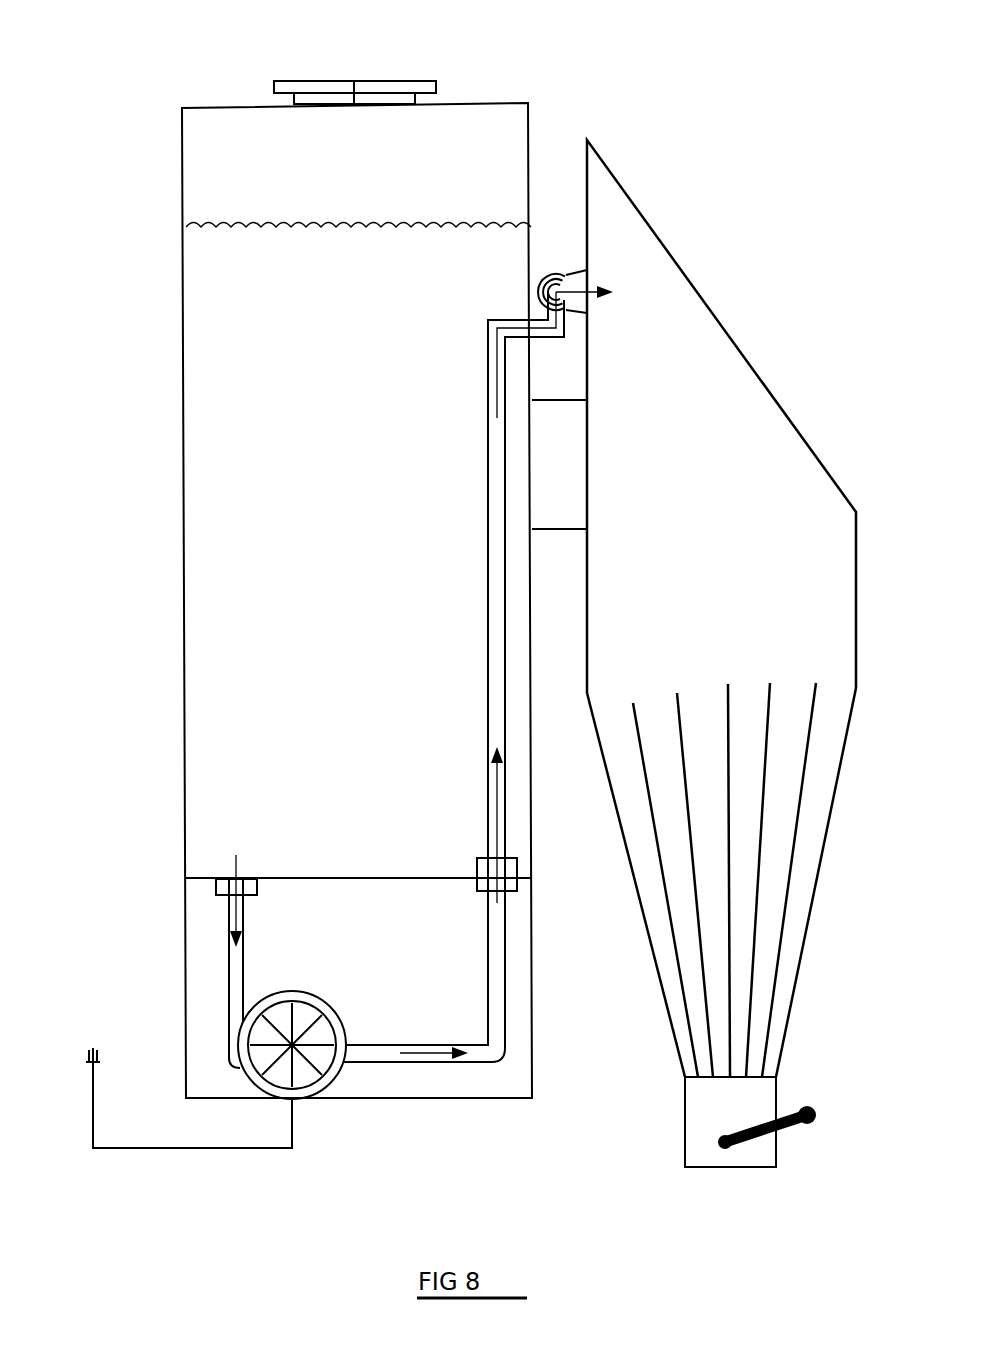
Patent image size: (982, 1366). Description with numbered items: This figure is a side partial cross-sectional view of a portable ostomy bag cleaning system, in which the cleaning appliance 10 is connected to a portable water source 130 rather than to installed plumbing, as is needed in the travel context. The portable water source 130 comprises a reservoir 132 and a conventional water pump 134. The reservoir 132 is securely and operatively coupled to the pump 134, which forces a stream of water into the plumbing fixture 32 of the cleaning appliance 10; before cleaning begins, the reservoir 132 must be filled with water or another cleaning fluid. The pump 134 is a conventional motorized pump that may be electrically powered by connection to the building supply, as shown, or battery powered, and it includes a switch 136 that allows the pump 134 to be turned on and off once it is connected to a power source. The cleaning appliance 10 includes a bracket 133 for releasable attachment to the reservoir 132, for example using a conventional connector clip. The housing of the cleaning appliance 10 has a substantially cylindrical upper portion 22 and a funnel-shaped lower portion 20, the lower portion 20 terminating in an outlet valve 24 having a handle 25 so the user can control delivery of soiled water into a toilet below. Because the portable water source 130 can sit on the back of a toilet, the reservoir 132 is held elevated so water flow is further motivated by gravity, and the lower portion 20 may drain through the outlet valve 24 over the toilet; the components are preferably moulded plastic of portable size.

The portable water source 130 is at (195, 90).
The reservoir 132 is at (347, 464).
The water pump 134 is at (385, 1080).
The switch 136 is at (312, 992).
The plumbing fixture 32 is at (557, 275).
The bracket 133 is at (562, 452).
The cleaning appliance 10 is at (672, 170).
The upper portion 22 is at (712, 362).
The lower portion 20 is at (805, 855).
The outlet valve 24 is at (776, 1093).
The handle 25 is at (800, 1128).